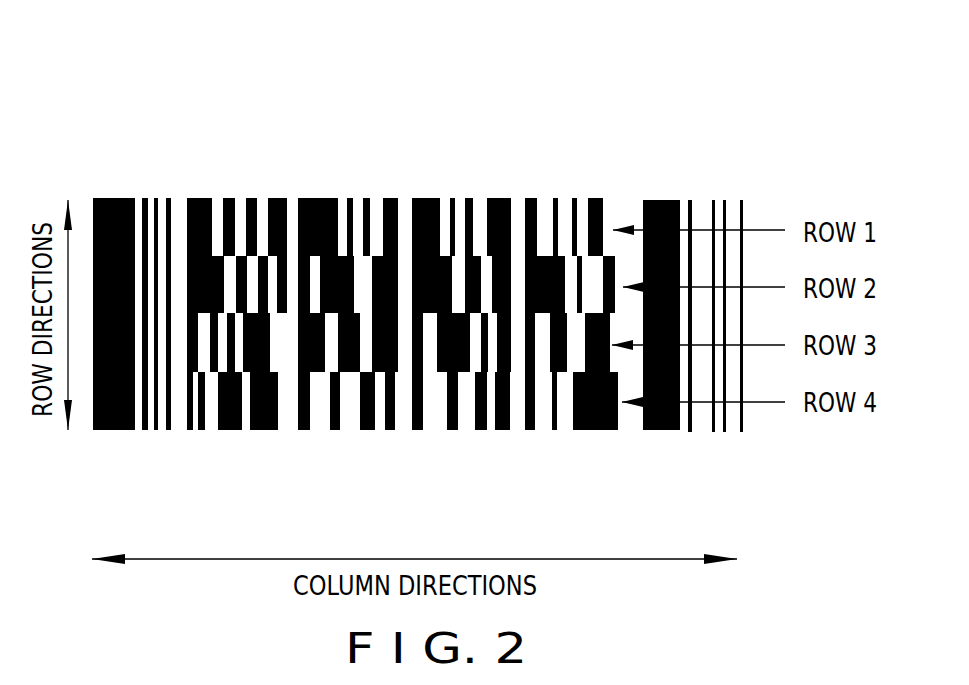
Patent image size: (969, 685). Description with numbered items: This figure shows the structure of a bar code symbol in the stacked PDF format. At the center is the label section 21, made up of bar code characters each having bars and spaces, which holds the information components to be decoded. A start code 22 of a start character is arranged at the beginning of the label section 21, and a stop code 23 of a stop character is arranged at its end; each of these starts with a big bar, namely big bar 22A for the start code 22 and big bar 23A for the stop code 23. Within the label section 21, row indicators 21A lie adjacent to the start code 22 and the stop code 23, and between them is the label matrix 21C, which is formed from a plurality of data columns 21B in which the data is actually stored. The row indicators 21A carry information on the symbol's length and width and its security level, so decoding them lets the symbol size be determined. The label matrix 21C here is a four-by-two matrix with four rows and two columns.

The label section 21 is at (471, 295).
The row indicator 21A is at (288, 187).
The data column 21B is at (405, 187).
The label matrix 21C is at (410, 285).
The start code 22 is at (170, 248).
The big bar 22A is at (104, 430).
The stop code 23 is at (764, 317).
The big bar 23A is at (663, 432).